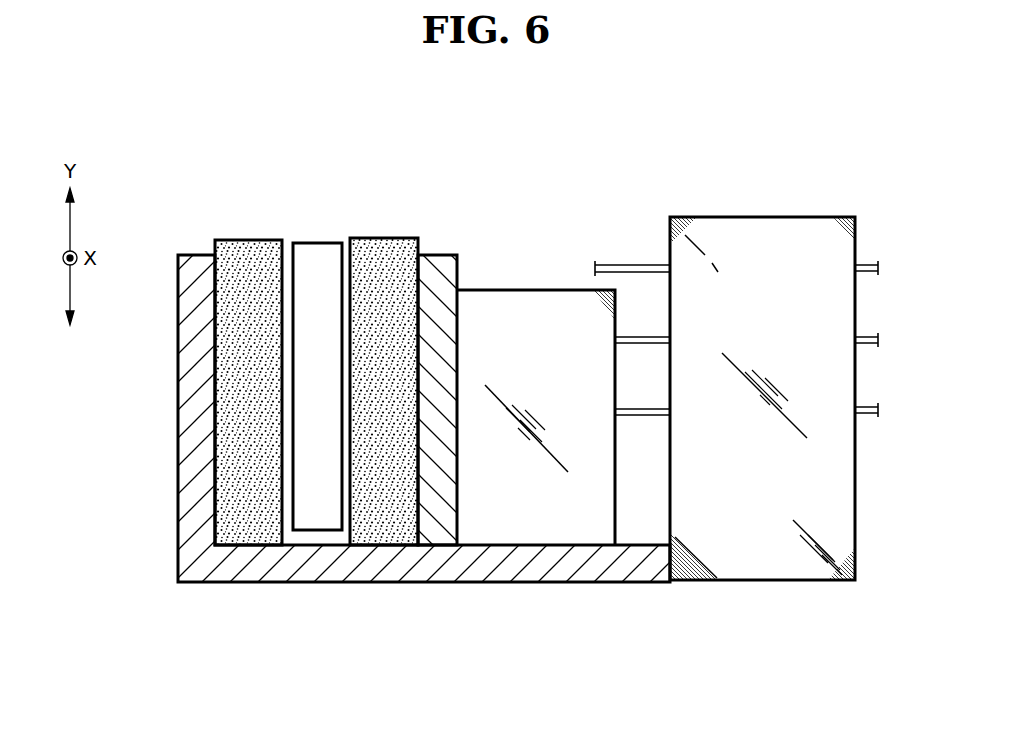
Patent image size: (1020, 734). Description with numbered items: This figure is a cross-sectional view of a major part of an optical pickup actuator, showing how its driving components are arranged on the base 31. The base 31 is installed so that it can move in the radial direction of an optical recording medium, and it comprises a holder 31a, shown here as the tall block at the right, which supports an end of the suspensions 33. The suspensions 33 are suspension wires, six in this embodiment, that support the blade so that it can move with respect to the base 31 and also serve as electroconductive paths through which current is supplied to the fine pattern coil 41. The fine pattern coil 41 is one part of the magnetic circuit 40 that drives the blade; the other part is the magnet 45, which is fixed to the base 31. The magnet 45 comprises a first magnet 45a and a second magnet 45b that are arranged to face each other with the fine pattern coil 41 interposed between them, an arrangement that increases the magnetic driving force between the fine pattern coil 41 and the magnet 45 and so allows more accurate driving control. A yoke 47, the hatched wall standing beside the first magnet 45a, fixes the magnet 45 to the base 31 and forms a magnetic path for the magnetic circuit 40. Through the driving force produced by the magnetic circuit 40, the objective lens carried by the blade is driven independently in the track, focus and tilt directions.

The base 31 is at (330, 573).
The holder 31a is at (782, 228).
The suspensions 33 is at (623, 265).
The magnetic circuit 40 is at (455, 150).
The fine pattern coil 41 is at (320, 248).
The magnet 45 is at (319, 400).
The first magnet 45a is at (387, 532).
The second magnet 45b is at (258, 532).
The yoke 47 is at (442, 260).